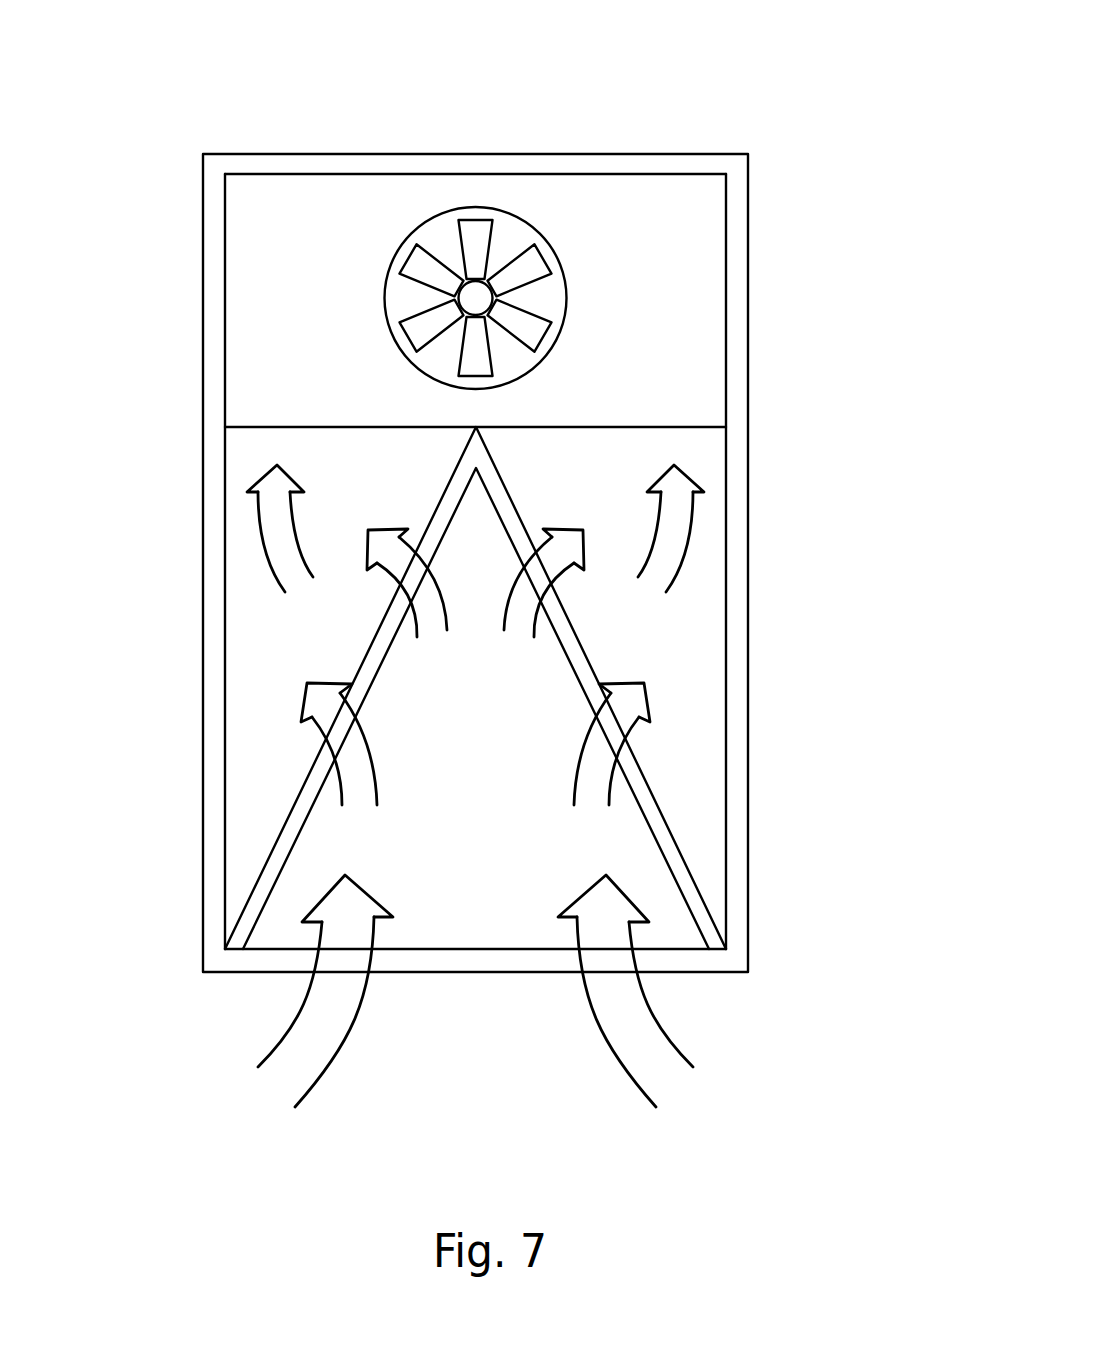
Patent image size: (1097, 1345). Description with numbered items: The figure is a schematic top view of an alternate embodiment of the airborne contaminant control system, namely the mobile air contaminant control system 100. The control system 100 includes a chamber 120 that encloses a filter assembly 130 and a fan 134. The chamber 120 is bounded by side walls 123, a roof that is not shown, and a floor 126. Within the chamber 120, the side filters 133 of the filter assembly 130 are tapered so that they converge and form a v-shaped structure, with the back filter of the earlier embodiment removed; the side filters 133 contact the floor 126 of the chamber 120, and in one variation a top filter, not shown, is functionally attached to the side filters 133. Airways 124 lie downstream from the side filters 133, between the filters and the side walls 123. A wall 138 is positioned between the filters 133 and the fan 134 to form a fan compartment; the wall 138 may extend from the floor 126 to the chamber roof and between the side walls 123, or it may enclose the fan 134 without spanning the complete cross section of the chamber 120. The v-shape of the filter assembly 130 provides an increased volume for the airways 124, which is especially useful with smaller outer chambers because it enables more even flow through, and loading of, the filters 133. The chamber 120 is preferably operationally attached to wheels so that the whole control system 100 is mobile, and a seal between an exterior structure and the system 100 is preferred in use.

The mobile air contaminant control system 100 is at (788, 68).
The chamber 120 is at (785, 383).
The side walls 123 is at (203, 502).
The airways 124 is at (328, 442).
The floor 126 is at (493, 751).
The filter assembly 130 is at (527, 688).
The side filters 133 is at (367, 650).
The fan 134 is at (512, 228).
The wall 138 is at (637, 427).